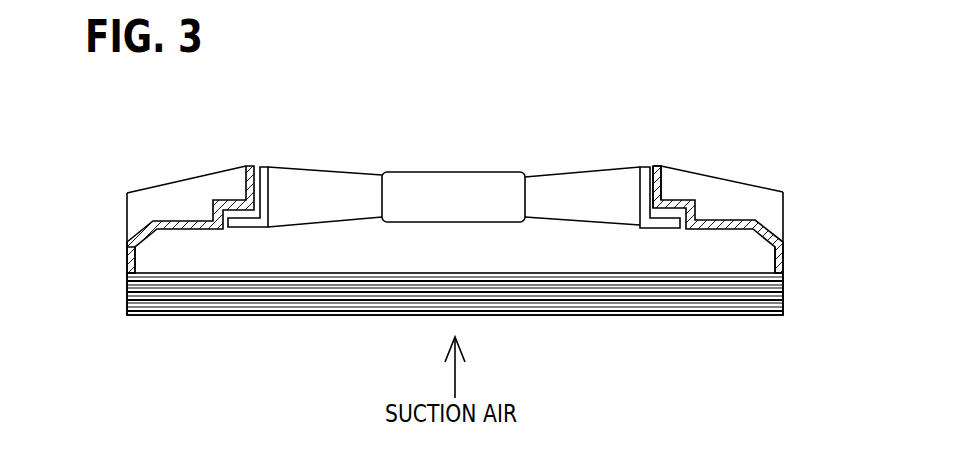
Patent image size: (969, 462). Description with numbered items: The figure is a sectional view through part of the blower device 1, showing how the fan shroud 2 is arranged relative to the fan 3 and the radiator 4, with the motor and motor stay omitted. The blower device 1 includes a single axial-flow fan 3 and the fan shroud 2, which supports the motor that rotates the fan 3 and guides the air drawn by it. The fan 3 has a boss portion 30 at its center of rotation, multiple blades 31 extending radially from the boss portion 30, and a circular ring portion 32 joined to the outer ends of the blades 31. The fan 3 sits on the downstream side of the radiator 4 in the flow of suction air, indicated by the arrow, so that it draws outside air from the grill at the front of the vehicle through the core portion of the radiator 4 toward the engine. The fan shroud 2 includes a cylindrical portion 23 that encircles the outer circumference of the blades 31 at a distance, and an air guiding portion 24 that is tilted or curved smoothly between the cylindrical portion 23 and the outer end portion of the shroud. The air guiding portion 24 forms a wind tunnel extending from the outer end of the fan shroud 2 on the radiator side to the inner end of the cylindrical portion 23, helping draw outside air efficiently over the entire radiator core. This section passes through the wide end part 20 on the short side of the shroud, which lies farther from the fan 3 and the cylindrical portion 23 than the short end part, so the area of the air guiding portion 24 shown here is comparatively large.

The blower device 1 is at (768, 320).
The fan shroud 2 is at (128, 250).
The wide end part 20 is at (129, 263).
The cylindrical portion 23 is at (663, 183).
The air guiding portion 24 is at (784, 256).
The fan 3 is at (470, 219).
The boss portion 30 is at (490, 167).
The blades 31 is at (555, 178).
The circular ring portion 32 is at (677, 231).
The radiator 4 is at (558, 300).